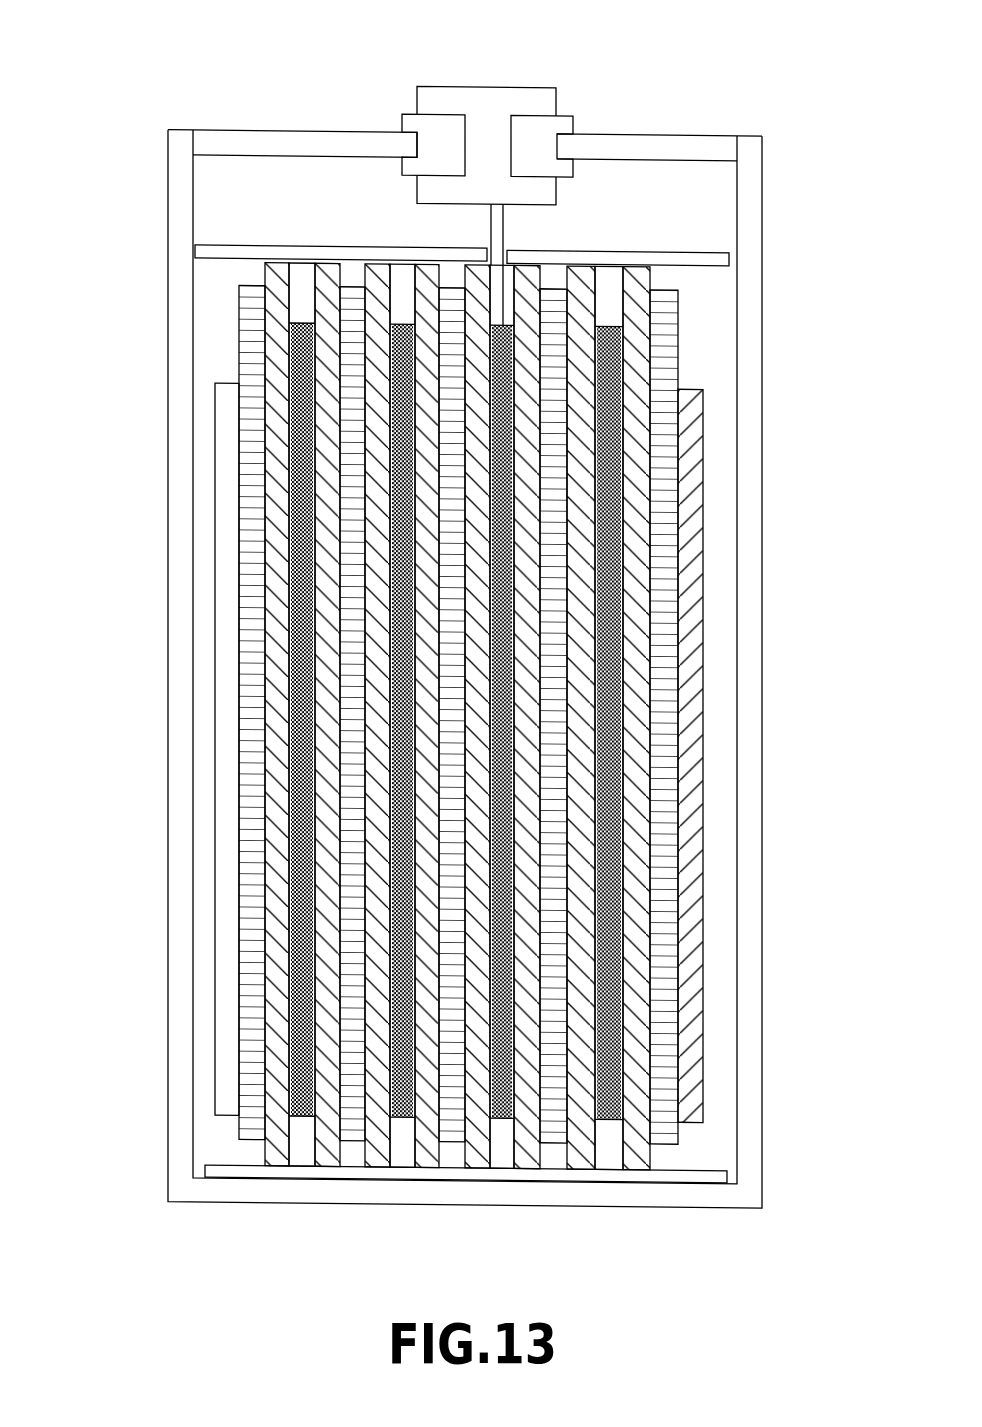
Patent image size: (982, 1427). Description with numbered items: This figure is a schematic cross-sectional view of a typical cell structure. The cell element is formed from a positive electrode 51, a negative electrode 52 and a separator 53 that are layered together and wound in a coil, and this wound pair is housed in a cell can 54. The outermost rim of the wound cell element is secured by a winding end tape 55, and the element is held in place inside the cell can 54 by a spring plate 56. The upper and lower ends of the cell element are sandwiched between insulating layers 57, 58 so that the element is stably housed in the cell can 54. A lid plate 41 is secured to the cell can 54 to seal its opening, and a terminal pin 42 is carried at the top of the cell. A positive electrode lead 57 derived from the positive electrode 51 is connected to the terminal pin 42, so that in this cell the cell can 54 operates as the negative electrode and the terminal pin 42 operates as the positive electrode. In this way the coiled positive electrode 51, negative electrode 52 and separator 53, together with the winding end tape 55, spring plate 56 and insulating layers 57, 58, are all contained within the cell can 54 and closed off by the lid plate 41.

The lid plate 41 is at (270, 128).
The terminal pin 42 is at (480, 84).
The positive electrode 51 is at (608, 1118).
The negative electrode 52 is at (670, 1140).
The separator 53 is at (525, 1158).
The cell can 54 is at (762, 187).
The winding end tape 55 is at (223, 822).
The spring plate 56 is at (697, 836).
The insulating layer 57 is at (495, 221).
The insulating layer 58 is at (207, 251).